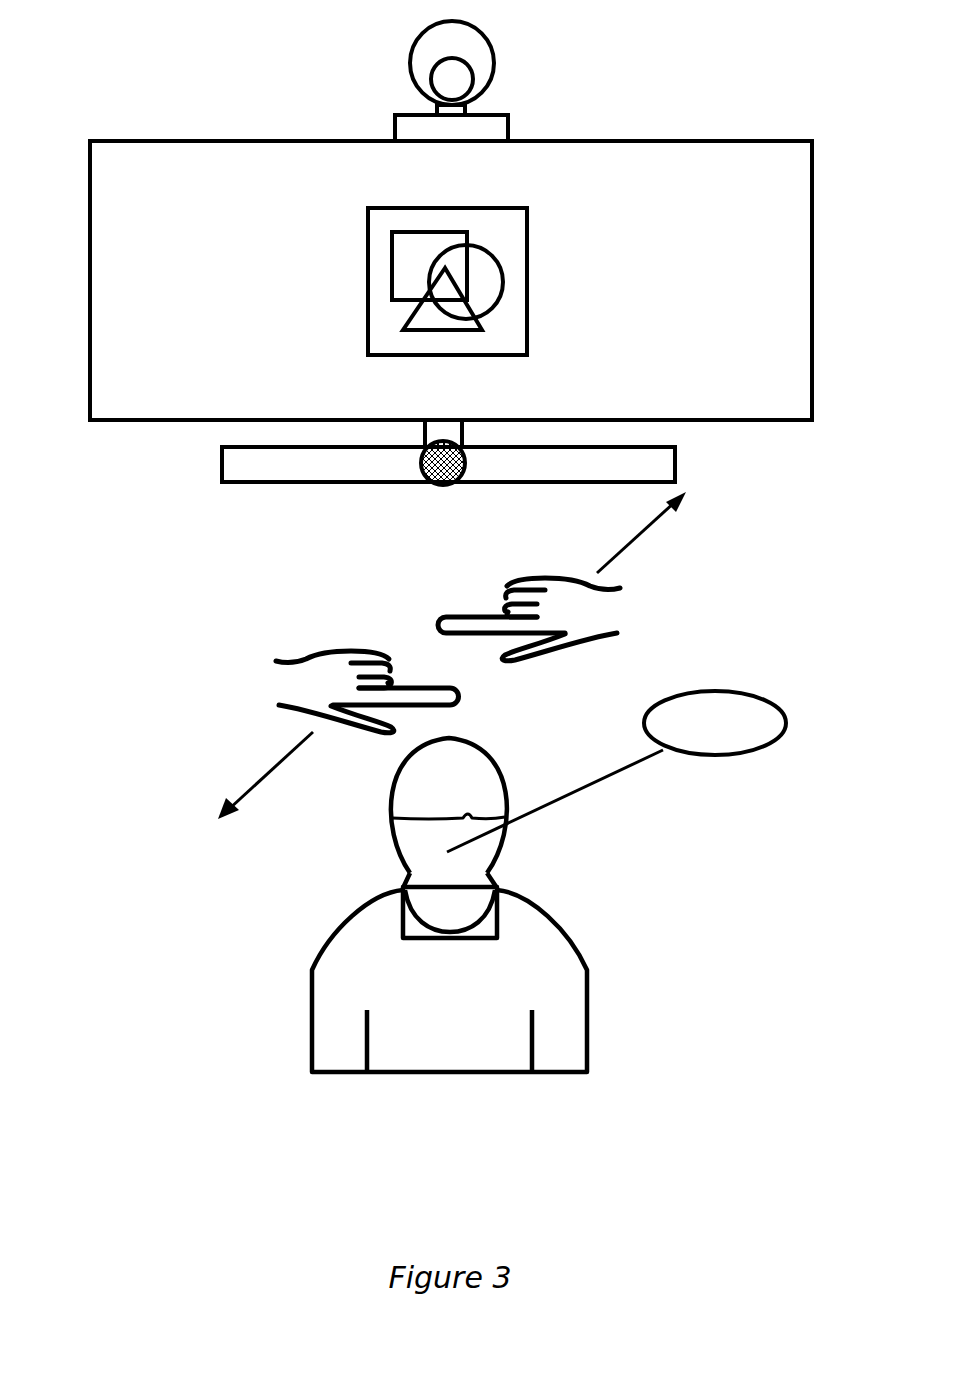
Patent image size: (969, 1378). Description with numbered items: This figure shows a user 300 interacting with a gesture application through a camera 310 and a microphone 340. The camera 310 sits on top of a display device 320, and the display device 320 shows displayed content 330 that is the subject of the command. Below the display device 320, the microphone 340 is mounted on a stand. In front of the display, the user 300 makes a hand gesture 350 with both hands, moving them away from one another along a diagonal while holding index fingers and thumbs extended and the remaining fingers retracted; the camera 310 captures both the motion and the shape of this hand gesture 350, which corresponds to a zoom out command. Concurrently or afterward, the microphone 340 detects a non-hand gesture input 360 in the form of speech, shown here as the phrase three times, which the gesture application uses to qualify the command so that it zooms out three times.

The user 300 is at (449, 933).
The camera 310 is at (508, 36).
The display device 320 is at (451, 311).
The displayed content / image 330 is at (553, 278).
The microphone 340 is at (435, 490).
The hand gesture input 350 is at (380, 604).
The non-hand gesture input 360 is at (716, 770).